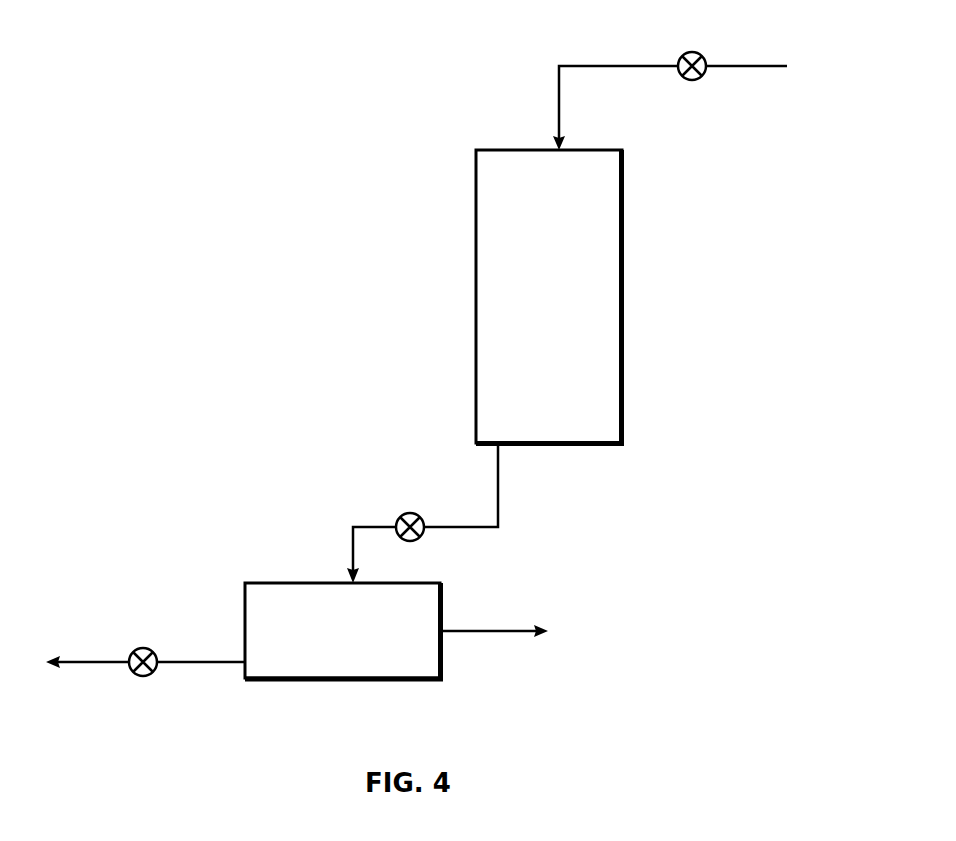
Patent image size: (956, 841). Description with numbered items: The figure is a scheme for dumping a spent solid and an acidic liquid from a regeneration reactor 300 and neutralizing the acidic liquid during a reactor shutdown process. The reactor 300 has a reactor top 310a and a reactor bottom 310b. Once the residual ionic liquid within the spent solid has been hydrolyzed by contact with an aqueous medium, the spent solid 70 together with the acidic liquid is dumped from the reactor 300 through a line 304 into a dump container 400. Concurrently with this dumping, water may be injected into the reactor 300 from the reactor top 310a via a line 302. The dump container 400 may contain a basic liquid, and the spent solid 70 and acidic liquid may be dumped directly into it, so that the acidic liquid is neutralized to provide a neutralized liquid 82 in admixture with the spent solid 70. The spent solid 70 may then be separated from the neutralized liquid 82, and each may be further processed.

The regeneration reactor 300 is at (550, 298).
The line 302 is at (595, 66).
The reactor top 310a is at (500, 140).
The reactor bottom 310b is at (611, 465).
The line 304 is at (498, 510).
The dump container 400 is at (344, 632).
The spent solid 70 is at (495, 624).
The neutralized liquid 82 is at (145, 660).